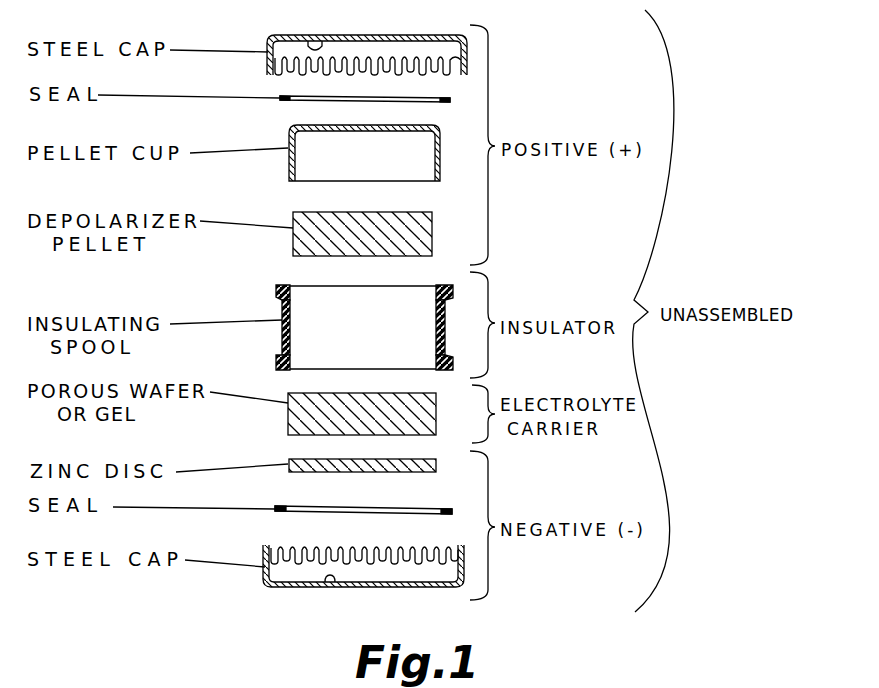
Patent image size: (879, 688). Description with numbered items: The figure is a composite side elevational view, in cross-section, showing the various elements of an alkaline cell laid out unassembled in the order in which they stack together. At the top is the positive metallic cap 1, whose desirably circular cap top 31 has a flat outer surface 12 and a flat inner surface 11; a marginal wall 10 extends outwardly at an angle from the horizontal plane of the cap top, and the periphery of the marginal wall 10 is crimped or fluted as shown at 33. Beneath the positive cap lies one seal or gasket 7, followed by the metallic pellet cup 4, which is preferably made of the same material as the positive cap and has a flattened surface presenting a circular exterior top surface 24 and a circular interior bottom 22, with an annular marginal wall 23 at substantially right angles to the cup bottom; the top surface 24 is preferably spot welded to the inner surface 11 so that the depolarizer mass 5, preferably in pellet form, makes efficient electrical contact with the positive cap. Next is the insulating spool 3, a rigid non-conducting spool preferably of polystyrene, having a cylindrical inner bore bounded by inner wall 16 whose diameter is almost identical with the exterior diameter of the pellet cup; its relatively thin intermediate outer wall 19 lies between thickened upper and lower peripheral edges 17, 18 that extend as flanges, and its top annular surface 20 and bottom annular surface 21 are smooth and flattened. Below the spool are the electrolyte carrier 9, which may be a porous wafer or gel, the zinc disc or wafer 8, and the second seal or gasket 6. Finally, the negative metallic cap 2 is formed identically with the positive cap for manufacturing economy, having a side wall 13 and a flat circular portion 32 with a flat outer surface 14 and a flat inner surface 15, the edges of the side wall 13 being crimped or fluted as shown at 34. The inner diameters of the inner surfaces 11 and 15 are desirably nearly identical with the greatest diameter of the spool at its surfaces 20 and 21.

The positive metallic cap 1 is at (388, 47).
The negative metallic cap 2 is at (384, 587).
The insulating spool 3 is at (368, 323).
The metallic cup 4 is at (441, 149).
The mass of depolarizer 5 is at (420, 232).
The seal or gasket 6 is at (442, 513).
The seal or gasket 7 is at (448, 100).
The zinc disc or wafer 8 is at (436, 458).
The electrolyte carrier 9 is at (430, 415).
The marginal wall 10 is at (268, 58).
The flat inner surface 11 is at (320, 46).
The flat outer surface 12 is at (290, 40).
The side wall 13 is at (458, 590).
The flat outer surface 14 is at (312, 588).
The flat inner surface 15 is at (328, 586).
The inner wall 16 is at (293, 299).
The upper peripheral edge 17 is at (452, 298).
The lower peripheral edge 18 is at (452, 362).
The outer wall 19 is at (446, 321).
The top annular surface 20 is at (285, 288).
The bottom annular surface 21 is at (283, 368).
The circular interior bottom 22 is at (336, 131).
The annular marginal wall 23 is at (289, 167).
The top surface 24 is at (316, 126).
The cap top 31 is at (362, 37).
The flat circular portion 32 is at (418, 588).
The crimped or fluted periphery 33 is at (380, 72).
The crimped or fluted edges 34 is at (355, 552).